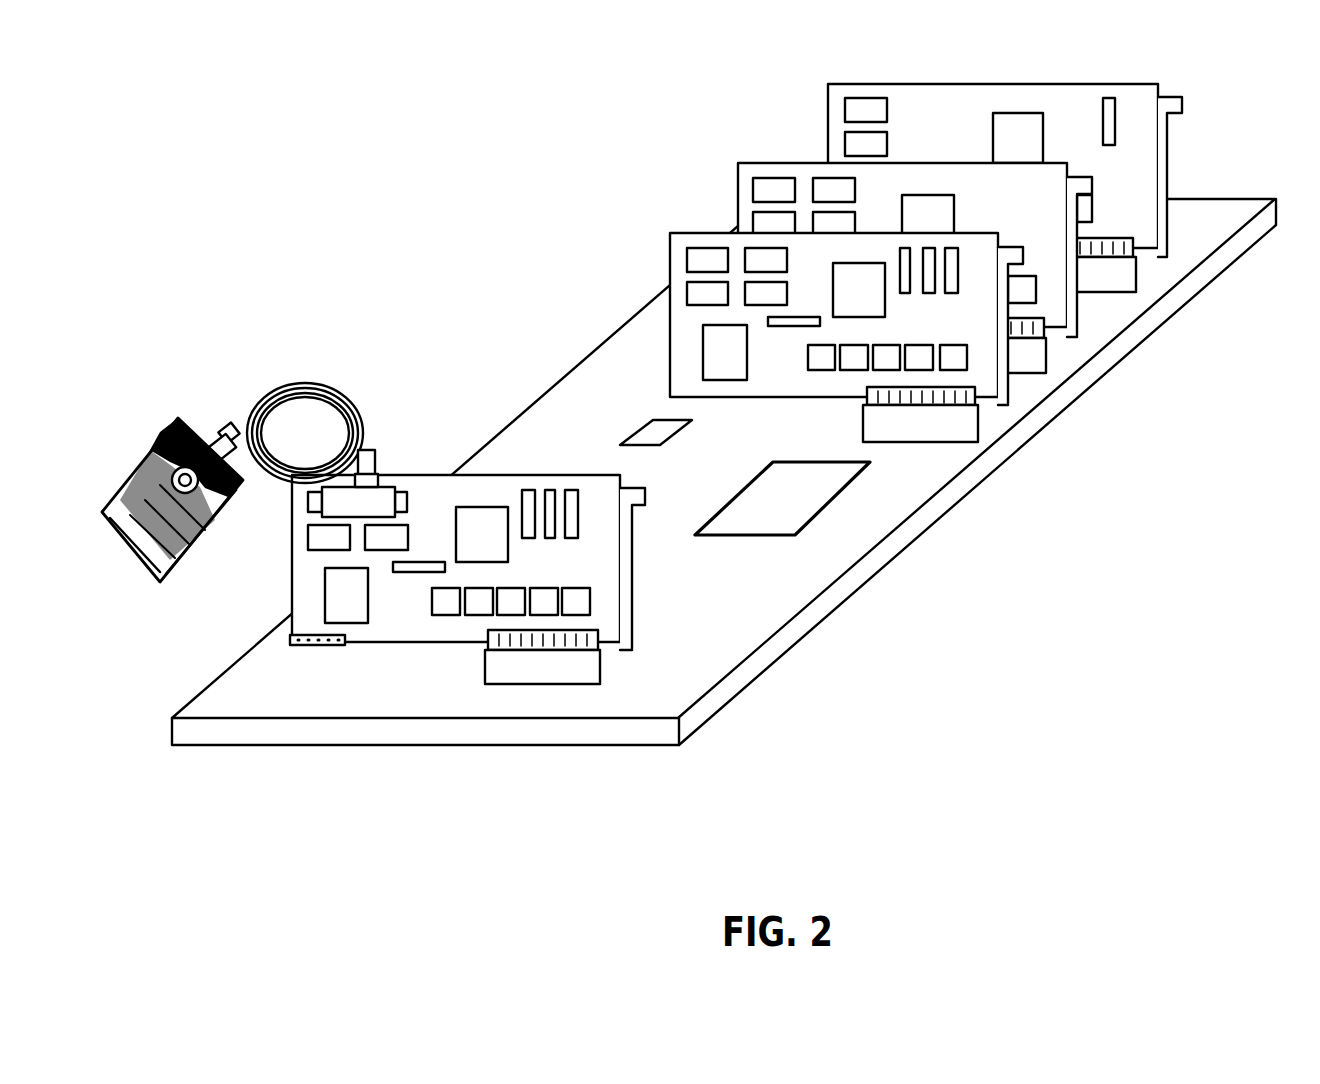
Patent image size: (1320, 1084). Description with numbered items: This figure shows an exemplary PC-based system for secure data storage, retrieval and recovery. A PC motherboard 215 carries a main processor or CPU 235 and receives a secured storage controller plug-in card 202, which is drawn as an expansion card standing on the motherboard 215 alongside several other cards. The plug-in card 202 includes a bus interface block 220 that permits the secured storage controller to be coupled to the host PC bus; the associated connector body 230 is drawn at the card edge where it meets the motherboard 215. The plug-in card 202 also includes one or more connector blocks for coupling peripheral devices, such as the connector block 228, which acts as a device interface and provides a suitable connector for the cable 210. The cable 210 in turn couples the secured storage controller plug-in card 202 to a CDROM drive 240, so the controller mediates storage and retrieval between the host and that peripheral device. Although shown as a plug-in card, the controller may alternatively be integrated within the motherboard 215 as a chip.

The secured storage controller plug-in card 202 is at (590, 474).
The cable 210 is at (303, 383).
The PC motherboard 215 is at (398, 627).
The bus interface block 220 is at (497, 649).
The connector block 228 is at (393, 487).
The connector body 230 is at (582, 665).
The main processor or CPU 235 is at (757, 536).
The CDROM drive 240 is at (165, 440).